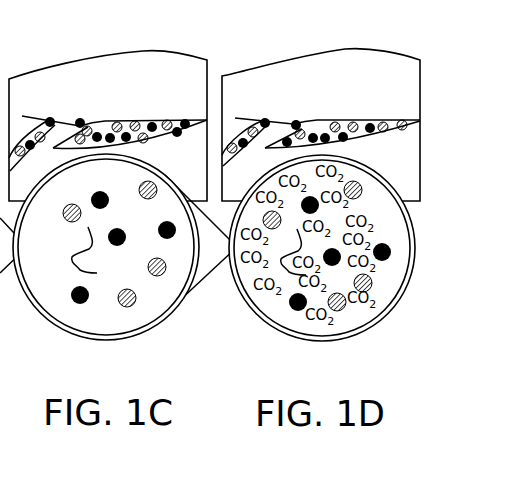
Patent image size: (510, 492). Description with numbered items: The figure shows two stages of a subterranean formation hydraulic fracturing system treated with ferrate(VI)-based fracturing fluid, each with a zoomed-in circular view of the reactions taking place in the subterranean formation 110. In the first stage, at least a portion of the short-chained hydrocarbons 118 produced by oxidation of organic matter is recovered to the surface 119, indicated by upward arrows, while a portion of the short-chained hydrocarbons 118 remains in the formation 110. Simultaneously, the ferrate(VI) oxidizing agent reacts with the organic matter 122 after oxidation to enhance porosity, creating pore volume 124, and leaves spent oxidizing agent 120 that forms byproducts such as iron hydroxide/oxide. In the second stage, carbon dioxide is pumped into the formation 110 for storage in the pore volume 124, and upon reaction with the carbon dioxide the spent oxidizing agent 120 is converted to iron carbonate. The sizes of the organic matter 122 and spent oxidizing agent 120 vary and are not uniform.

In FIG. 1C, the subterranean formation 110 is at (93, 104).
In FIG. 1D, the subterranean formation 110 is at (400, 94).
In FIG. 1C, the short-chained hydrocarbons 118 is at (77, 263).
In FIG. 1D, the short-chained hydrocarbons 118 is at (284, 266).
In FIG. 1C, the surface 119 is at (64, 183).
In FIG. 1C, the spent oxidizing agent 120 is at (118, 114).
In FIG. 1D, the spent oxidizing agent 120 is at (353, 113).
In FIG. 1C, the organic matter 122 is at (177, 118).
In FIG. 1D, the organic matter 122 is at (296, 111).
In FIG. 1C, the pore volume 124 is at (88, 318).
In FIG. 1D, the pore volume 124 is at (389, 214).